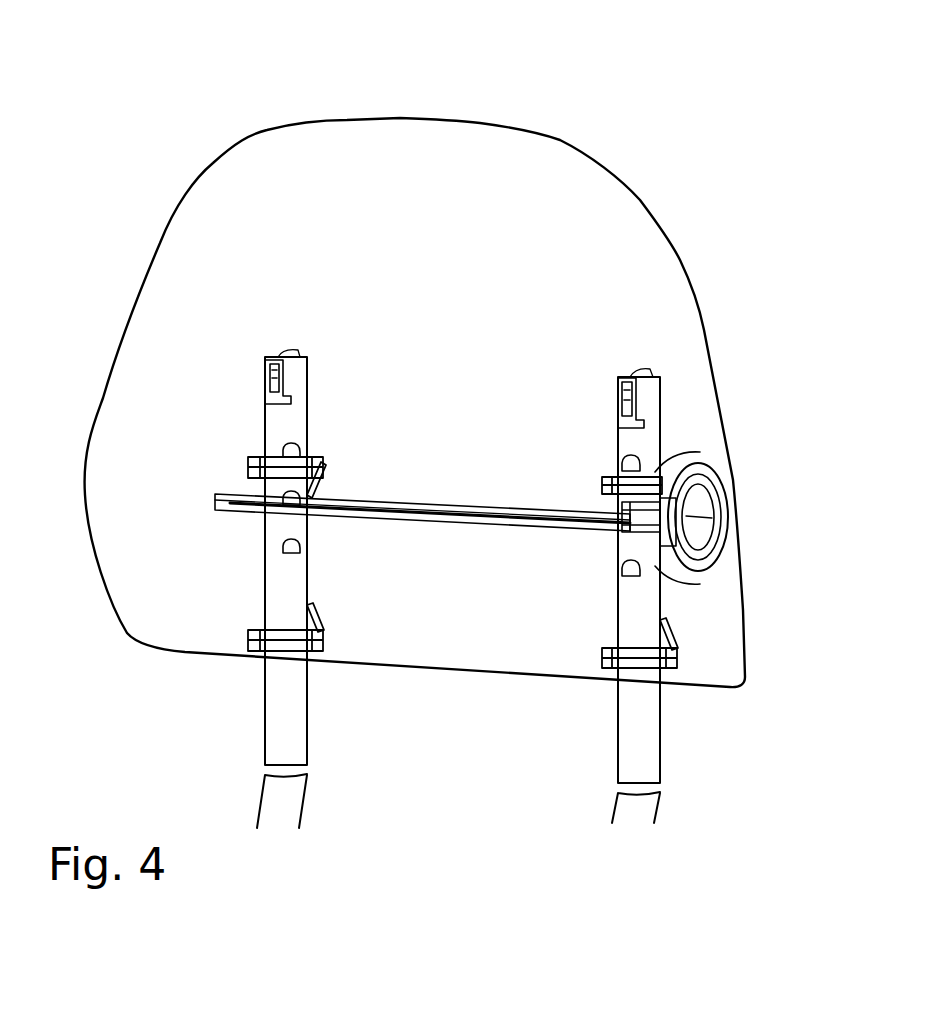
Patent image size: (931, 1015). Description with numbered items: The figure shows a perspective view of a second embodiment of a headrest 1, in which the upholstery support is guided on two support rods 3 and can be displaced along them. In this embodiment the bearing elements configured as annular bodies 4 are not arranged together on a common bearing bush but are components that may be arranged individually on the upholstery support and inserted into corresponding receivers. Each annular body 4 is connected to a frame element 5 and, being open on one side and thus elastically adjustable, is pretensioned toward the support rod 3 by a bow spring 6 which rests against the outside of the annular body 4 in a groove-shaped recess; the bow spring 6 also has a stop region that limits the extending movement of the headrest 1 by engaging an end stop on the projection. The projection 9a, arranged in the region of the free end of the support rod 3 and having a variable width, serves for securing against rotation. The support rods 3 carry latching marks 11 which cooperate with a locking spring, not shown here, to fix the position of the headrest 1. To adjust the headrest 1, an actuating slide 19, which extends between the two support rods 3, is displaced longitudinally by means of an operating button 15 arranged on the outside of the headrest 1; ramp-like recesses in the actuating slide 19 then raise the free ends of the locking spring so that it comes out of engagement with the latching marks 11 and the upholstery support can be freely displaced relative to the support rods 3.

The headrest 1 is at (458, 198).
The support rod 3 is at (277, 717).
The annular body 4 is at (250, 467).
The frame element 5 is at (250, 458).
The bow spring 6 is at (265, 613).
The projection 9a is at (263, 378).
The latching marks 11 is at (300, 551).
The operating button 15 is at (723, 522).
The actuating slide 19 is at (437, 500).